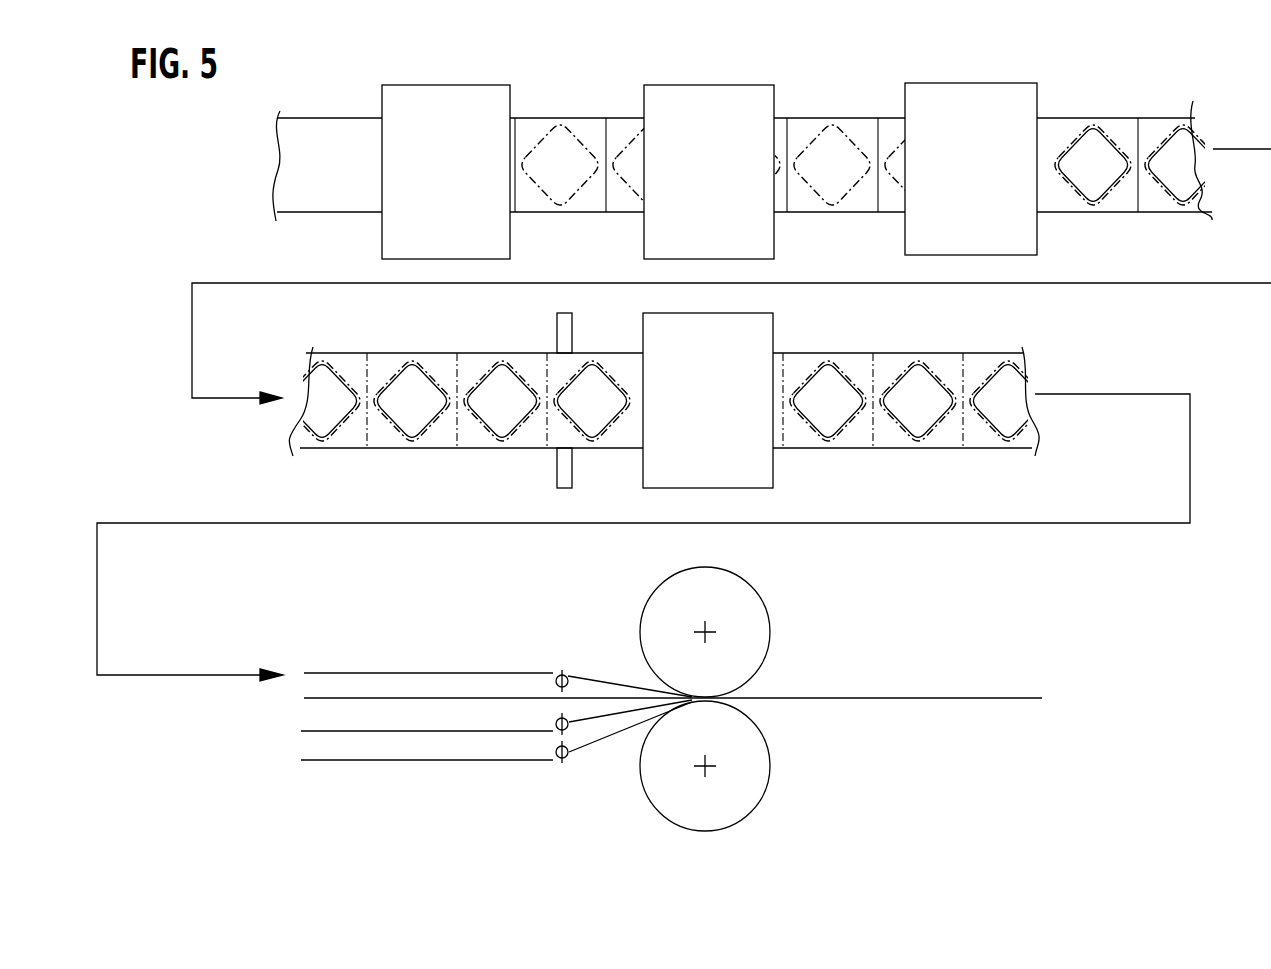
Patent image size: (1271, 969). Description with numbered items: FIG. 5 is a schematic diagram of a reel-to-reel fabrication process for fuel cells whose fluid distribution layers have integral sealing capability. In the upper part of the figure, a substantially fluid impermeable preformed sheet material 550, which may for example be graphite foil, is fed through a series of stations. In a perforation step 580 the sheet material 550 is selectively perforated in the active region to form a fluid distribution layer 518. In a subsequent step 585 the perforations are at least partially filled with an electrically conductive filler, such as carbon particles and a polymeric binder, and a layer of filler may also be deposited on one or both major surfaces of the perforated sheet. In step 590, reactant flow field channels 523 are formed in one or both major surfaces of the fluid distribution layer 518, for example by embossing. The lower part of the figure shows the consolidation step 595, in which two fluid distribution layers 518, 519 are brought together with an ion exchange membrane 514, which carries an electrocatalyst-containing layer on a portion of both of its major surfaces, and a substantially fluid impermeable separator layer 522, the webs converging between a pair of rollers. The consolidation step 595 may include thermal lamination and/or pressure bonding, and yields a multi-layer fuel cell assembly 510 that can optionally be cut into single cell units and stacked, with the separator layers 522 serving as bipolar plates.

The preformed sheet material 550 is at (326, 132).
The perforation step 580 is at (490, 100).
The filling step 585 is at (737, 108).
The channel forming step 590 is at (995, 100).
The reactant flow field channels 523 is at (1104, 128).
The fluid distribution layer 518 is at (470, 440).
The consolidation step 595 is at (745, 580).
The ion exchange membrane 514 is at (378, 698).
The fluid distribution layer 519 is at (433, 731).
The separator layer 522 is at (500, 760).
The multi-layer fuel cell assembly 510 is at (848, 697).